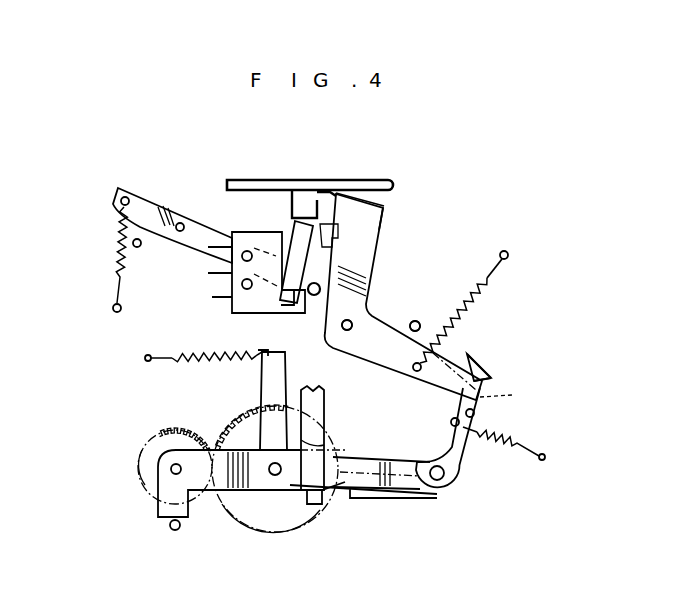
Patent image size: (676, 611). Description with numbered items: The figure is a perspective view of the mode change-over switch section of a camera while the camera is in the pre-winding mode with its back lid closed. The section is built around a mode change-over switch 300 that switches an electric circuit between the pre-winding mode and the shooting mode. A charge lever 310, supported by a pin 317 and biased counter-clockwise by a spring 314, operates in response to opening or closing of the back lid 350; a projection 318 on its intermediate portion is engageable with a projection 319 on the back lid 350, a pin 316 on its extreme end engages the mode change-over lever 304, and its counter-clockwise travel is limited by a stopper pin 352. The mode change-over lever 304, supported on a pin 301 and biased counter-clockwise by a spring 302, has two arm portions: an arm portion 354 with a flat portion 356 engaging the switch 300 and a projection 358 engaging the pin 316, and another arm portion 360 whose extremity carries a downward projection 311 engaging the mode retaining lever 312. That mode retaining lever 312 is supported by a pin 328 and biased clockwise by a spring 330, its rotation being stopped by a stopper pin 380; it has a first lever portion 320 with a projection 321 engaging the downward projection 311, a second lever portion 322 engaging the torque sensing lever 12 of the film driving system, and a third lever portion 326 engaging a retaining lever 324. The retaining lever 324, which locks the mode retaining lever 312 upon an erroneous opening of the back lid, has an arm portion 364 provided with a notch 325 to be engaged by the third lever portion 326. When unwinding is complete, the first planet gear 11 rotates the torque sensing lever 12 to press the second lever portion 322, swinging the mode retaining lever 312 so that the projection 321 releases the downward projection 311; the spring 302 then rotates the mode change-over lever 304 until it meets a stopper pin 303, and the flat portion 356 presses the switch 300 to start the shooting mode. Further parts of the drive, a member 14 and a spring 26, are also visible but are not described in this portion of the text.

The first planet gear 11 is at (155, 478).
The torque sensing lever 12 is at (272, 486).
The cam lever 14 is at (243, 503).
The return spring 26 is at (226, 360).
The mode change-over switch 300 is at (240, 304).
The pivot pin 301 is at (352, 322).
The spring 302 is at (497, 289).
The stopper pin 303 is at (417, 321).
The mode change-over lever 304 is at (388, 266).
The charge lever 310 is at (142, 207).
The downward projection 311 is at (517, 397).
The mode retaining lever 312 is at (462, 462).
The spring 314 is at (116, 247).
The pin 316 is at (316, 304).
The pin 317 is at (182, 223).
The projection 318 is at (288, 242).
The projection 319 is at (302, 208).
The first lever portion 320 is at (482, 360).
The projection 321 is at (493, 375).
The second lever portion 322 is at (365, 500).
The retaining lever 324 is at (327, 398).
The notch 325 is at (316, 504).
The third lever portion 326 is at (360, 466).
The pin 328 is at (442, 494).
The spring 330 is at (507, 447).
The back lid 350 is at (258, 186).
The stopper pin 352 is at (140, 247).
The arm portion 354 is at (392, 214).
The flat portion 356 is at (355, 190).
The projection 358 is at (322, 200).
The arm portion 360 is at (458, 354).
The arm portion 364 is at (318, 437).
The stopper pin 380 is at (474, 417).